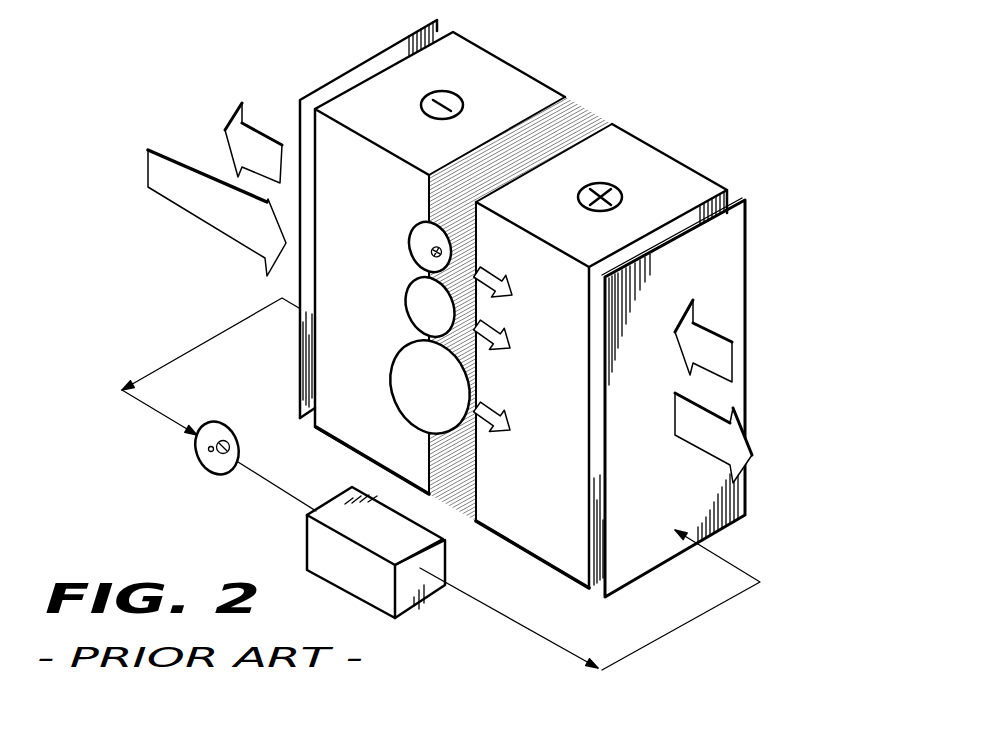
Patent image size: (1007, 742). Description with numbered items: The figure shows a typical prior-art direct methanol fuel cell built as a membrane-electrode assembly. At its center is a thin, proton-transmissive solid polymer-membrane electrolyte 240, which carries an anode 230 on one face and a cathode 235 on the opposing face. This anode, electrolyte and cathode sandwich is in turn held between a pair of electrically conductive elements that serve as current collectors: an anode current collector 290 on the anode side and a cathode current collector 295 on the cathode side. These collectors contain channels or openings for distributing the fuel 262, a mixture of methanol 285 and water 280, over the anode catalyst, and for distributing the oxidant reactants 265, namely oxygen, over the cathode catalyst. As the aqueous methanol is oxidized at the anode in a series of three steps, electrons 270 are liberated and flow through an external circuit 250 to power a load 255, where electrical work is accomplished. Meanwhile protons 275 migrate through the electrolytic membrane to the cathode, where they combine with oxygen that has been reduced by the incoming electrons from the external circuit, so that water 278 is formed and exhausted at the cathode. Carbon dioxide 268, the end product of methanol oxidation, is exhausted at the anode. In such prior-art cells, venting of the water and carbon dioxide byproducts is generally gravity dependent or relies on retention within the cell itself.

The anode 230 is at (503, 66).
The cathode 235 is at (660, 159).
The solid polymer-membrane electrolyte 240 is at (582, 118).
The external circuit 250 is at (680, 628).
The load 255 is at (303, 541).
The fuel 262 is at (147, 163).
The oxidant reactants 265 is at (732, 363).
The carbon dioxide 268 is at (223, 133).
The electrons 270 is at (205, 464).
The protons 275 is at (408, 239).
The water 278 is at (753, 460).
The water 280 is at (408, 295).
The methanol 285 is at (393, 364).
The anode current collector 290 is at (299, 376).
The cathode current collector 295 is at (745, 258).